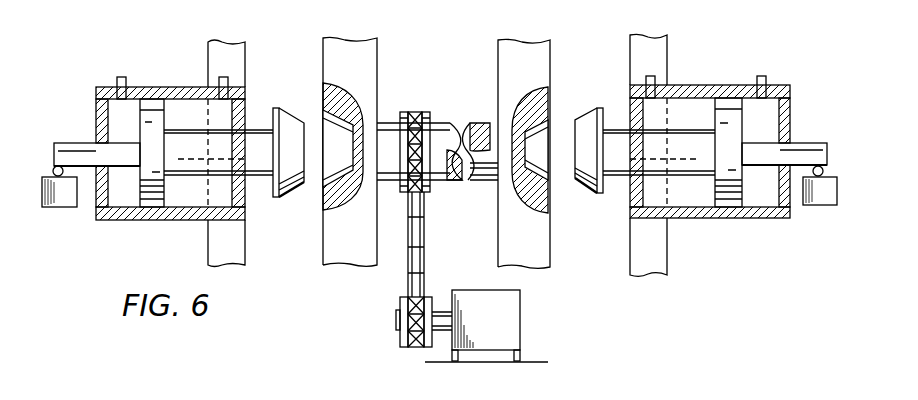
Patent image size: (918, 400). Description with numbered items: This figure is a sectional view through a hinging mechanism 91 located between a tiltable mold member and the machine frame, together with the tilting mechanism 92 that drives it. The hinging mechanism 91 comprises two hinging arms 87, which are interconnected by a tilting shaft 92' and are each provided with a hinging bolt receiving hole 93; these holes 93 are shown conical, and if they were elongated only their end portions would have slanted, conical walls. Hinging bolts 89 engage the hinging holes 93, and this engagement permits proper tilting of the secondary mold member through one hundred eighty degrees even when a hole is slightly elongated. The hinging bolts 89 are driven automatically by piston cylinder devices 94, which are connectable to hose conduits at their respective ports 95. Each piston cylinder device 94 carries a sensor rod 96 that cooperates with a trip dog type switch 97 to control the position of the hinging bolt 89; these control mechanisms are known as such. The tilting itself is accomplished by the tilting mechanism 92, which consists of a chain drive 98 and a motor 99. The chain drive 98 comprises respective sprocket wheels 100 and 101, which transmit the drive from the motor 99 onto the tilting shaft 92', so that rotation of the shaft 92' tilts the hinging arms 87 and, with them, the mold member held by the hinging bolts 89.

The hinging arms 87 is at (353, 52).
The hinging bolts 89 is at (284, 128).
The hinging mechanism 91 is at (564, 31).
The tilting mechanism 92 is at (460, 263).
The tilting shaft 92' is at (437, 137).
The hinging bolt receiving holes 93 is at (328, 170).
The piston cylinder devices 94 is at (146, 213).
The ports 95 is at (218, 82).
The sensor rods 96 is at (72, 150).
The trip dog type switches 97 is at (60, 207).
The chain drive 98 is at (428, 224).
The motor 99 is at (515, 320).
The sprocket wheel 100 is at (402, 330).
The sprocket wheel 101 is at (428, 118).